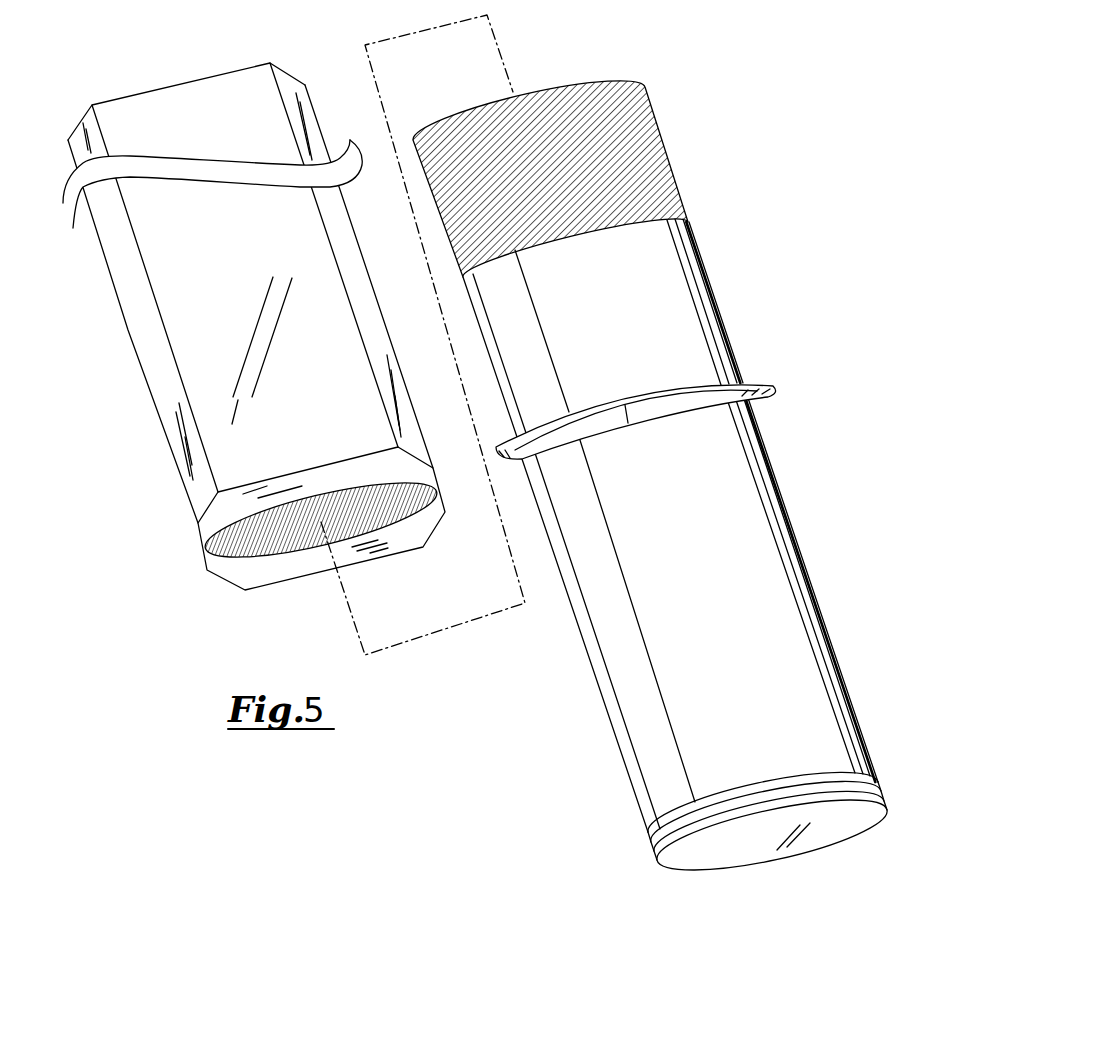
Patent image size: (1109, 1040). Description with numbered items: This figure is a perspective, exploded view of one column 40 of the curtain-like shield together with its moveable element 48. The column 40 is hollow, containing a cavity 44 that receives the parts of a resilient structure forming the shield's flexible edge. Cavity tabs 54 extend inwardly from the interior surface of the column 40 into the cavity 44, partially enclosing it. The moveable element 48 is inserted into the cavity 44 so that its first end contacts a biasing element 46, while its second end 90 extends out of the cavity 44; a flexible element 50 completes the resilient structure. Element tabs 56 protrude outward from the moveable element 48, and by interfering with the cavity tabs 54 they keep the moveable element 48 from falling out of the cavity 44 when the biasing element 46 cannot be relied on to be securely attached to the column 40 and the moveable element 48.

The column 40 is at (350, 214).
The cavity 44 is at (227, 578).
The cavity tabs 54 is at (398, 530).
The biasing element 46 is at (660, 140).
The moveable element 48 is at (703, 273).
The element tabs 56 is at (771, 383).
The flexible element 50 is at (650, 840).
The second end 90 is at (872, 750).